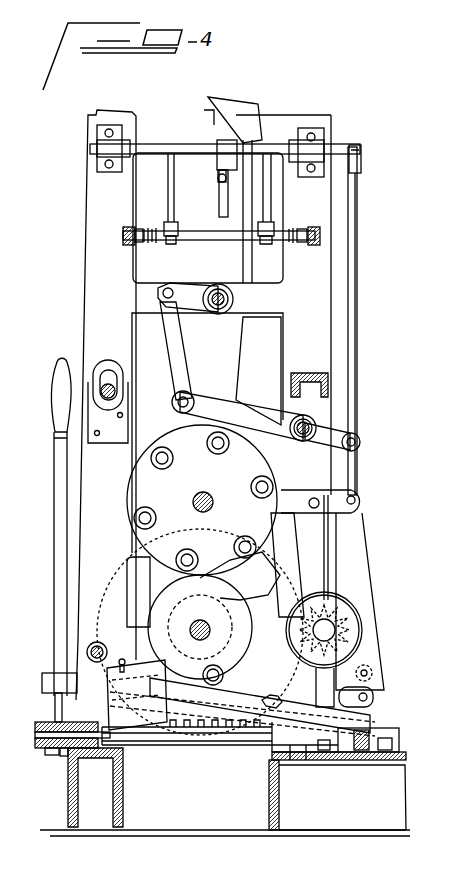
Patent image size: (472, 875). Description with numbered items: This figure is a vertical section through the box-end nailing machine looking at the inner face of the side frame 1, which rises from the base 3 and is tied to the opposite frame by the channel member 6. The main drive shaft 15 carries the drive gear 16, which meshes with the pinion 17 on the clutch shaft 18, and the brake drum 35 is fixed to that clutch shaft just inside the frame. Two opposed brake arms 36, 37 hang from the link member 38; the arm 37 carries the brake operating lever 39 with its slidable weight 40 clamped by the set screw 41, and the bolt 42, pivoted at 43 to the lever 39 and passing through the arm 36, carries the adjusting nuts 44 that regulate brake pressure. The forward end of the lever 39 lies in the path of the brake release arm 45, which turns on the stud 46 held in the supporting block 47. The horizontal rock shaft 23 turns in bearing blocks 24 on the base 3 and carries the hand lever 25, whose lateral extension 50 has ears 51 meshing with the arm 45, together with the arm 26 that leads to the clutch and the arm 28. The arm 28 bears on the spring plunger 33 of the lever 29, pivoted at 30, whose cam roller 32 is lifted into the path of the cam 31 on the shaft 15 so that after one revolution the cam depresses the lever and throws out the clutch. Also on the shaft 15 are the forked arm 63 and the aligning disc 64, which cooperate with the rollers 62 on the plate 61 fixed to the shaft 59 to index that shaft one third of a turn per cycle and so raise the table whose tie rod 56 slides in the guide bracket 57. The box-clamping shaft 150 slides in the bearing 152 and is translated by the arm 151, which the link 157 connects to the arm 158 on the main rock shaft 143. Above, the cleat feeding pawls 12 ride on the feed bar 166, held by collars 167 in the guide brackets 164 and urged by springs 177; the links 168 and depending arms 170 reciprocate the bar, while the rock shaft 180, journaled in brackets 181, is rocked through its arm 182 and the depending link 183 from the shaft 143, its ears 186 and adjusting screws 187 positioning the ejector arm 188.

The side frame 1 is at (80, 266).
The base 3 is at (406, 756).
The channel member 6 is at (313, 373).
The cleat feeding pawl 12 is at (143, 232).
The main drive shaft 15 is at (193, 622).
The drive gear 16 is at (262, 745).
The pinion 17 is at (346, 595).
The clutch shaft 18 is at (342, 625).
The horizontal rock shaft 23 is at (222, 746).
The bearing blocks 24 is at (399, 736).
The hand lever 25 is at (52, 529).
The arm 26 is at (334, 752).
The arm 28 is at (355, 752).
The lever 29 is at (226, 673).
The pivot 30 is at (105, 642).
The cam 31 is at (180, 647).
The cam roller 32 is at (236, 700).
The spring plunger 33 is at (369, 735).
The brake drum 35 is at (355, 634).
The brake arm 36 is at (290, 542).
The brake arm 37 is at (364, 548).
The link member 38 is at (333, 492).
The brake operating lever 39 is at (298, 760).
The weight 40 is at (145, 730).
The set screw 41 is at (124, 660).
The bolt 42 is at (364, 665).
The pivot connection 43 is at (373, 690).
The adjusting nuts 44 is at (254, 703).
The brake release arm 45 is at (55, 705).
The stud 46 is at (35, 736).
The supporting block 47 is at (100, 758).
The lateral extension 50 is at (48, 755).
The horizontal ears 51 is at (64, 756).
The tie rod 56 is at (108, 368).
The guide bracket 57 is at (100, 370).
The shaft 59 is at (210, 498).
The plate 61 is at (178, 428).
The anti-friction rollers 62 is at (210, 452).
The forked arm 63 is at (182, 570).
The aligning disc 64 is at (150, 605).
The main rock shaft 143 is at (316, 428).
The shaft 150 is at (233, 294).
The arm 151 is at (204, 284).
The bearing 152 is at (224, 302).
The link 157 is at (186, 364).
The arm 158 is at (250, 410).
The guide brackets 164 is at (125, 227).
The feed bar 166 is at (218, 240).
The fixed collars 167 is at (136, 243).
The links 168 is at (179, 228).
The depending arms 170 is at (168, 166).
The coil spring 177 is at (150, 244).
The rock shaft 180 is at (345, 147).
The brackets 181 is at (108, 154).
The arm 182 is at (363, 162).
The depending link 183 is at (357, 398).
The lateral ears 186 is at (217, 168).
The adjusting screws 187 is at (218, 178).
The ejector arm 188 is at (219, 200).